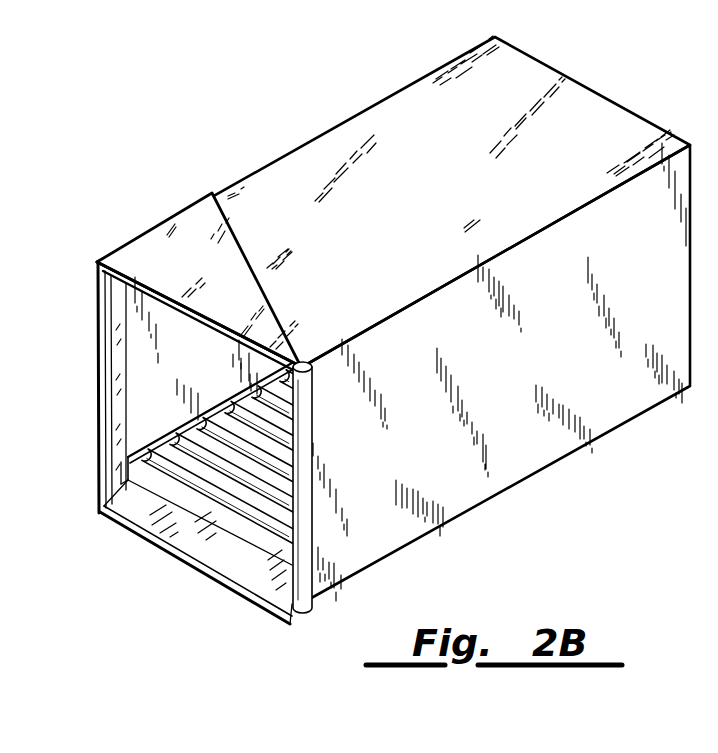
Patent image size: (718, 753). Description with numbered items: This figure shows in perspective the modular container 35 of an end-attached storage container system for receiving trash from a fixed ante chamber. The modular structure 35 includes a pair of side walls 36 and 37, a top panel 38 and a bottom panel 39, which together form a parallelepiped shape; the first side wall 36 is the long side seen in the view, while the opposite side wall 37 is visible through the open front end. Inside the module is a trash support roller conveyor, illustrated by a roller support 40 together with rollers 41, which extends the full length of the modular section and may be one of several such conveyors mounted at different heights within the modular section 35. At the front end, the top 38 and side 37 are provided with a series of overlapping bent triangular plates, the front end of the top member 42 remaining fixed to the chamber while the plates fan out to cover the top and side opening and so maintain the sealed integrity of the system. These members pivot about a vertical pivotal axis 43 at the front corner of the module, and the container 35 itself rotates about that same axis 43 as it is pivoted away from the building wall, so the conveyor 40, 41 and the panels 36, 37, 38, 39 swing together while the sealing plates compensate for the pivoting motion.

The modular container 35 is at (371, 330).
The side wall 36 is at (574, 356).
The side wall 37 is at (200, 372).
The top panel 38 is at (459, 202).
The bottom panel 39 is at (259, 567).
The roller support 40 is at (106, 506).
The rollers 41 is at (215, 500).
The top member 42 is at (216, 270).
The vertical pivotal axis 43 is at (300, 433).